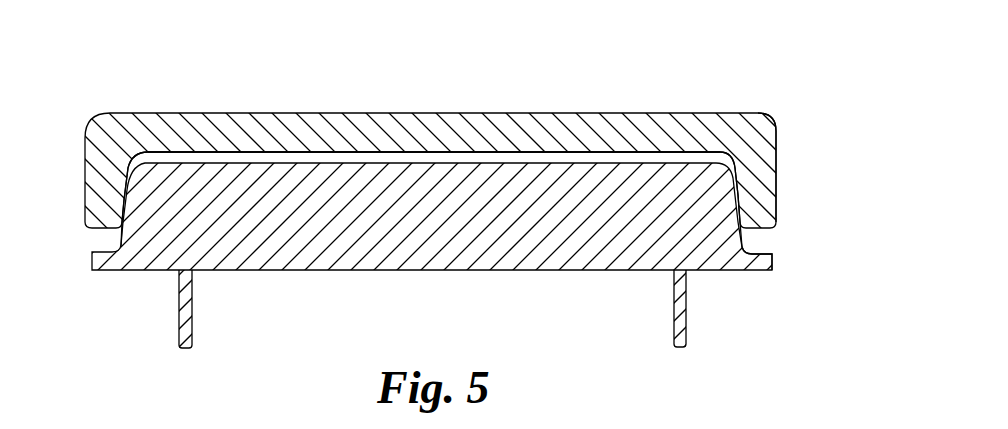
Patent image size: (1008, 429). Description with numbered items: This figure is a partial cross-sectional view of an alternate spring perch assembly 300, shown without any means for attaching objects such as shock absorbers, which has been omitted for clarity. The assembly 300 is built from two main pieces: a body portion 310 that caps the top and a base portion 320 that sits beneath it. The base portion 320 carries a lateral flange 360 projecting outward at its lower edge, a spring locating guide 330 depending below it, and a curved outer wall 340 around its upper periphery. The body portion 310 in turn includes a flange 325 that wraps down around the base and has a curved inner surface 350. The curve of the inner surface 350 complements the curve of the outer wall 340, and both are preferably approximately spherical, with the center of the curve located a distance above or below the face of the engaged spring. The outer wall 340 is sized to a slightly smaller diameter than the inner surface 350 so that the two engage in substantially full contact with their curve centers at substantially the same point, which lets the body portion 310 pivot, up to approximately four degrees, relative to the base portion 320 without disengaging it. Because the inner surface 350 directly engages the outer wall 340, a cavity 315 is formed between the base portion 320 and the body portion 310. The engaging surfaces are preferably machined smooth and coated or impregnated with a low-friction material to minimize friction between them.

The spring perch assembly 300 is at (557, 80).
The body portion 310 is at (670, 112).
The cavity 315 is at (452, 157).
The base portion 320 is at (467, 272).
The flange 325 is at (777, 192).
The spring locating guide 330 is at (685, 328).
The curved outer wall 340 is at (732, 184).
The curved inner surface 350 is at (746, 168).
The lateral flange 360 is at (772, 260).